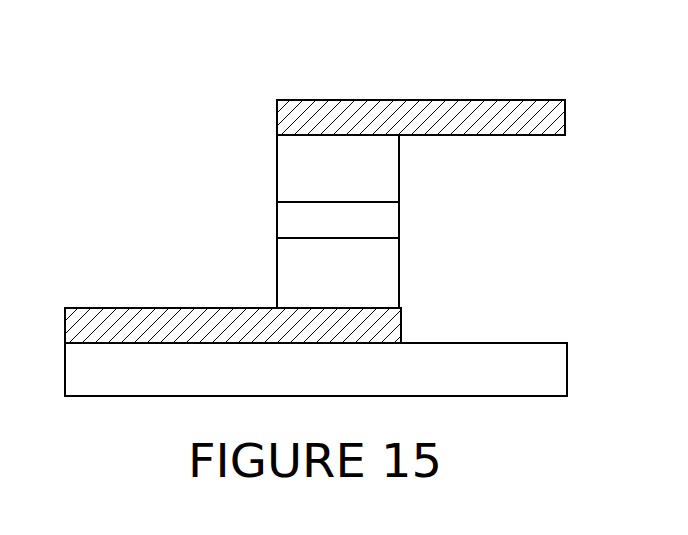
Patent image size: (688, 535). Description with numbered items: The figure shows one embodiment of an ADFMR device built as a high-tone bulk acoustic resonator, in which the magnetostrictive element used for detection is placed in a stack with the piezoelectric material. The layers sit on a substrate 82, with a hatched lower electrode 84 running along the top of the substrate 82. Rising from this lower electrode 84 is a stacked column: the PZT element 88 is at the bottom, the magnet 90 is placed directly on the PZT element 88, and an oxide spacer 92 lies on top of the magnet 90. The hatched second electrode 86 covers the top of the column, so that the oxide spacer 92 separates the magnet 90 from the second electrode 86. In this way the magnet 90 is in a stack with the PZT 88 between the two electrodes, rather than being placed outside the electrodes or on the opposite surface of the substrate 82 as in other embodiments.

The substrate 82 is at (568, 376).
The bottom electrode 84 is at (100, 308).
The second electrode 86 is at (566, 112).
The PZT element 88 is at (400, 273).
The magnet 90 is at (277, 219).
The oxide spacer 92 is at (400, 177).